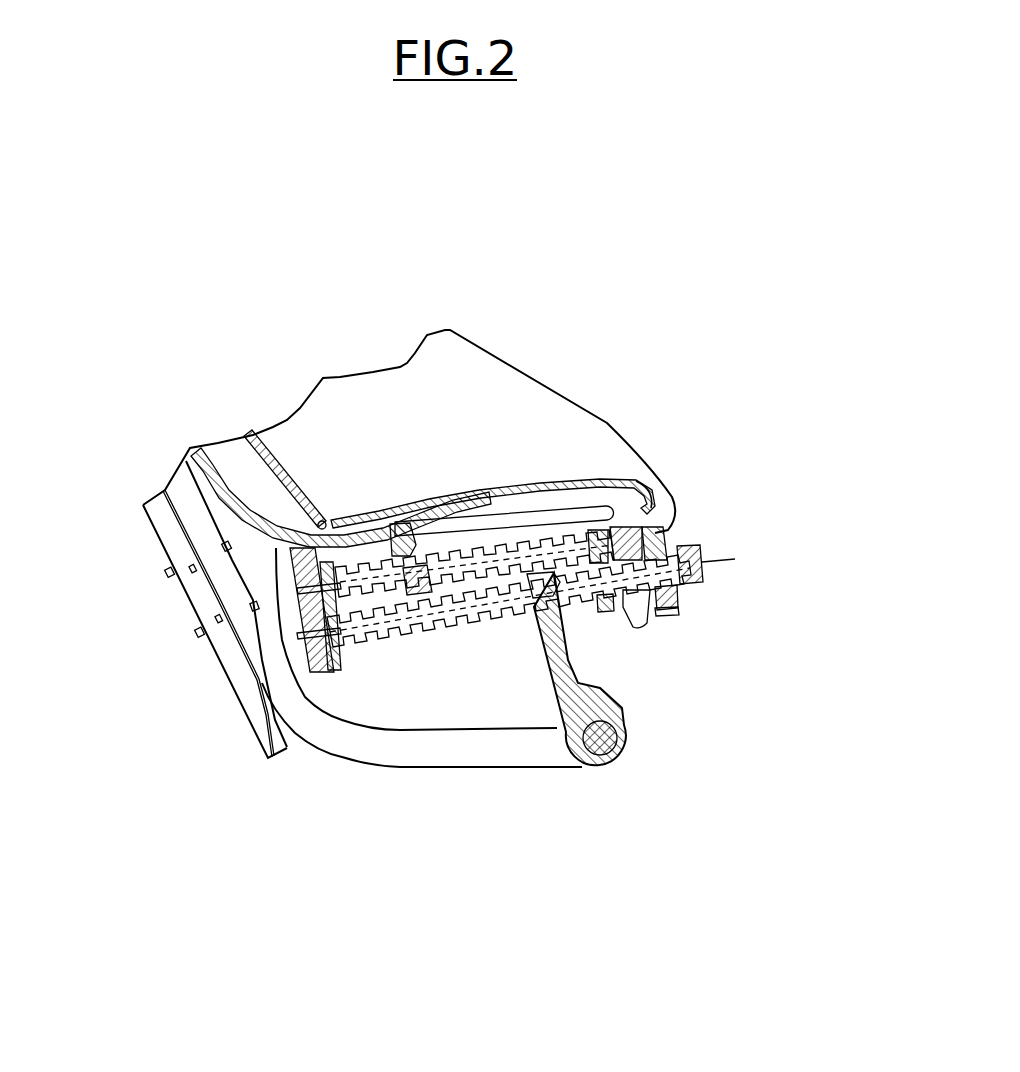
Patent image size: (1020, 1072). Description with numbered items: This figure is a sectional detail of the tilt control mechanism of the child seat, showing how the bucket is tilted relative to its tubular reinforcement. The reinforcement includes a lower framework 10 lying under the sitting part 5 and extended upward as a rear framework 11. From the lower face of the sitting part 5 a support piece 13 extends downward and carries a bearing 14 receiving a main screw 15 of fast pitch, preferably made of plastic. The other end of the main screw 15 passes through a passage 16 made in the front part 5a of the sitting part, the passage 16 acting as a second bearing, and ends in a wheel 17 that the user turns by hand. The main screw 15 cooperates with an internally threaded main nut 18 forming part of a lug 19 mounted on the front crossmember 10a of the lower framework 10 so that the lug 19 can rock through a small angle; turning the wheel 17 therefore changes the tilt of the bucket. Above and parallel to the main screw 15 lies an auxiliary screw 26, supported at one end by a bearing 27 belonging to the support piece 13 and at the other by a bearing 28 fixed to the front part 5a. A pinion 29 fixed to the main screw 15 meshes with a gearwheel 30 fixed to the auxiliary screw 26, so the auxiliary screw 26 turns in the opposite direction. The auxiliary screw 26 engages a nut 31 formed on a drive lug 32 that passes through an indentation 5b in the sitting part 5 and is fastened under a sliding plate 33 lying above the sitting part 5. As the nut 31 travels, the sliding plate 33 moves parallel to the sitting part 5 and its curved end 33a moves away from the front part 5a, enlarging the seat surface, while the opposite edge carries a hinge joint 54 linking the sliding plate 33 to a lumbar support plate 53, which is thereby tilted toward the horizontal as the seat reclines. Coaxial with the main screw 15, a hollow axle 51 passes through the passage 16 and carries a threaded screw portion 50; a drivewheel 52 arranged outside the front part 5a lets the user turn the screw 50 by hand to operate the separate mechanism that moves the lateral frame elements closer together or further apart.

The sitting part 5 is at (338, 530).
The front part of the sitting part 5a is at (673, 520).
The indentation 5b is at (443, 527).
The lower framework 10 is at (542, 747).
The front crossmember 10a is at (613, 722).
The rear framework 11 is at (193, 532).
The support piece 13 is at (325, 673).
The bearing 14 is at (295, 640).
The main screw 15 is at (460, 630).
The passage 16 is at (645, 622).
The wheel 17 is at (697, 553).
The main nut 18 is at (527, 613).
The lug 19 is at (617, 703).
The auxiliary screw 26 is at (362, 522).
The bearing 27 is at (293, 597).
The bearing 28 is at (609, 540).
The pinion 29 is at (340, 672).
The gearwheel 30 is at (293, 573).
The nut 31 is at (432, 630).
The drive lug 32 is at (398, 640).
The sliding plate 33 is at (500, 490).
The curved end 33a is at (640, 492).
The threaded screw portion 50 is at (612, 612).
The hollow axle 51 is at (680, 600).
The drivewheel 52 is at (678, 612).
The plate 53 is at (263, 433).
The hinge joint 54 is at (322, 522).